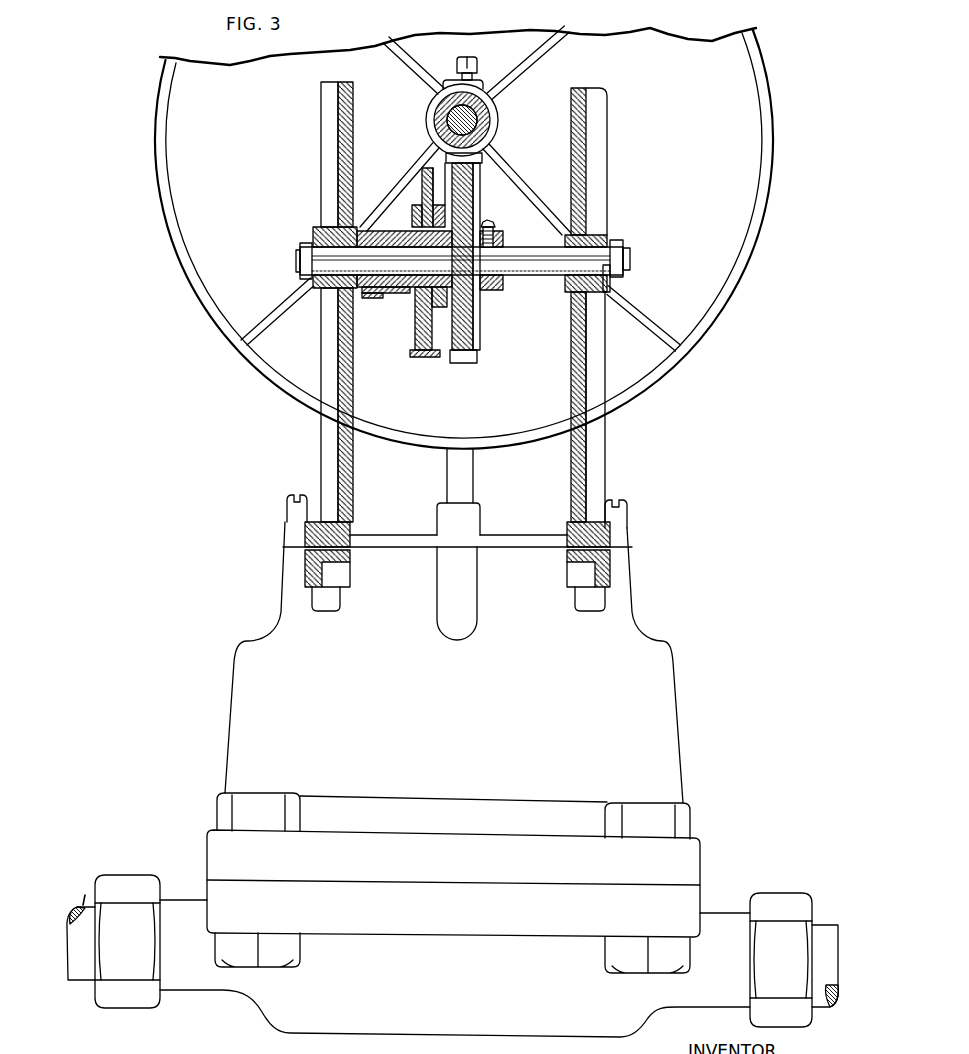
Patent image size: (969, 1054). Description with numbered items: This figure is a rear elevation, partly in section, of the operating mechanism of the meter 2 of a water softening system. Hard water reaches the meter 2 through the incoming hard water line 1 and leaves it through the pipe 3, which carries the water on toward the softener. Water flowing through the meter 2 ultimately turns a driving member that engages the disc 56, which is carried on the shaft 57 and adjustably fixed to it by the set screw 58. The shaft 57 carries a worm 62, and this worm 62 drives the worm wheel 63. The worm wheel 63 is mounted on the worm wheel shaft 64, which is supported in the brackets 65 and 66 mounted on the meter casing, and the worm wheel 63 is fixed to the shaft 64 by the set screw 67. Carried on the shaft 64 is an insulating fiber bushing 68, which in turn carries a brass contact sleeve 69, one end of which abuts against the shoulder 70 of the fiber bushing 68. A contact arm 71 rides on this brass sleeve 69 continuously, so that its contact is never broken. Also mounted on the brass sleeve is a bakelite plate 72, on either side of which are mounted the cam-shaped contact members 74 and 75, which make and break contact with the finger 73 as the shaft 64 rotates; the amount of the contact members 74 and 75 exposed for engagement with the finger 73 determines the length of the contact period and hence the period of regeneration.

The incoming hard water line 1 is at (90, 907).
The meter 2 is at (675, 702).
The pipe 3 is at (825, 922).
The disc 56 is at (750, 252).
The shaft 57 is at (440, 128).
The set screw 58 is at (478, 59).
The worm 62 is at (491, 128).
The worm wheel 63 is at (476, 327).
The worm wheel shaft 64 is at (537, 278).
The bracket 65 is at (608, 120).
The bracket 66 is at (354, 120).
The set screw 67 is at (496, 225).
The insulating fiber bushing 68 is at (397, 294).
The brass contact sleeve 69 is at (384, 222).
The shoulder 70 is at (444, 308).
The contact arm 71 is at (372, 299).
The bakelite plate 72 is at (421, 175).
The finger 73 is at (423, 358).
The contact member 74 is at (414, 312).
The contact member 75 is at (438, 205).